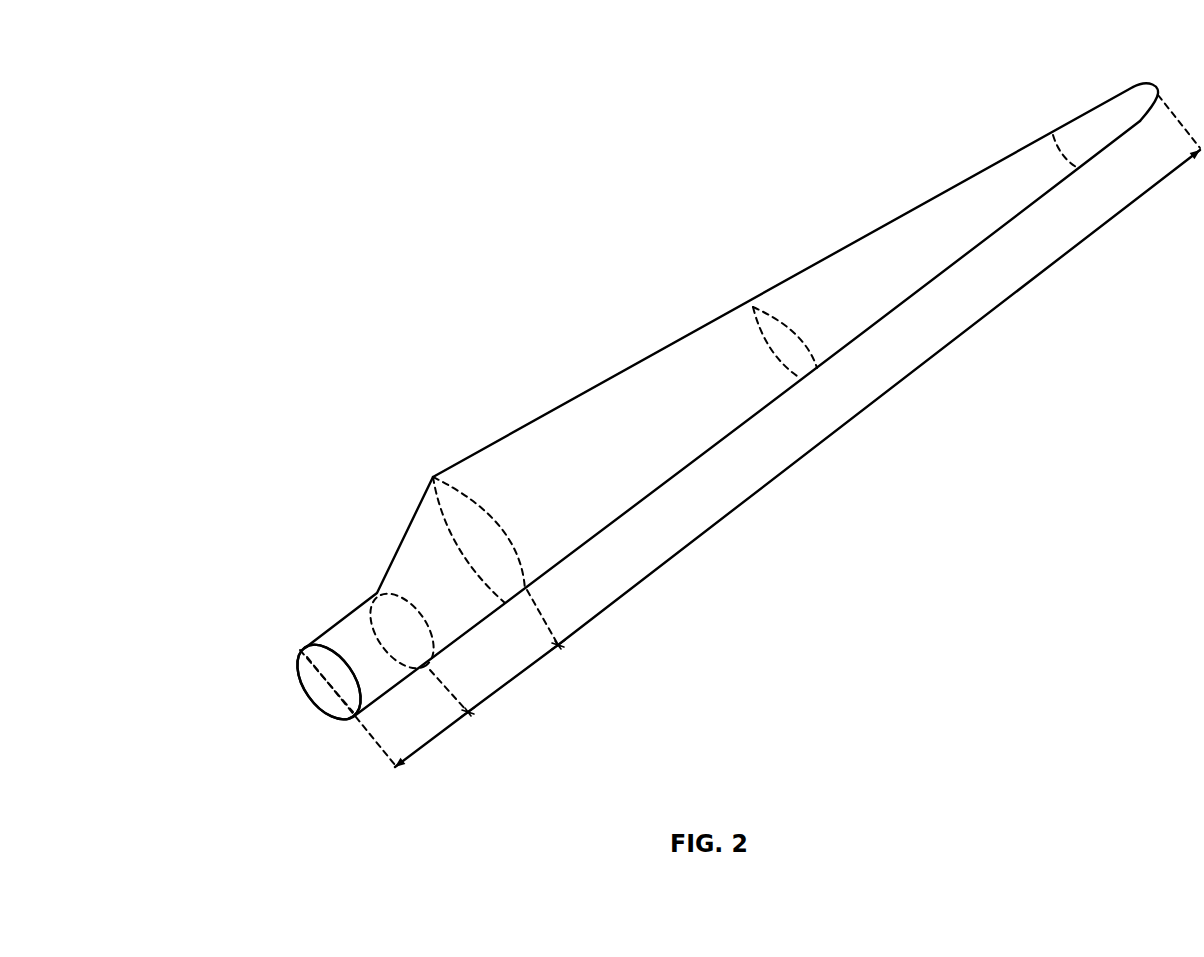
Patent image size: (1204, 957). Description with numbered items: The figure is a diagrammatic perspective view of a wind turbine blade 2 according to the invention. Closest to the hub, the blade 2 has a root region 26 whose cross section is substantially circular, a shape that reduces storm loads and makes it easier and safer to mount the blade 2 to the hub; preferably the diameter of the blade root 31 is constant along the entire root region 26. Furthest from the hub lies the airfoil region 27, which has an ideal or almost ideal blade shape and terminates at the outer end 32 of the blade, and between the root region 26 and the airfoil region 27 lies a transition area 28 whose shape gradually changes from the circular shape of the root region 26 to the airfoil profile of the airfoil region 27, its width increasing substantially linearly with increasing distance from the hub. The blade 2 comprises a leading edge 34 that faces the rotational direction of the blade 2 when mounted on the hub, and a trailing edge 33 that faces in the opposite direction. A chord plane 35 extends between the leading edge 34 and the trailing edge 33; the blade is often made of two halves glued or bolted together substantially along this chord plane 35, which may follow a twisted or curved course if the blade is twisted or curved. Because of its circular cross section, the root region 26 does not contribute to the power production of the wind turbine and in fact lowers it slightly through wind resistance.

The blade 2 is at (592, 315).
The root region 26 is at (432, 738).
The airfoil region 27 is at (883, 397).
The transition area 28 is at (523, 673).
The blade root 31 is at (355, 650).
The tip end 32 is at (1130, 108).
The trailing edge 33 is at (682, 337).
The leading edge 34 is at (732, 433).
The chord plane 35 is at (310, 677).